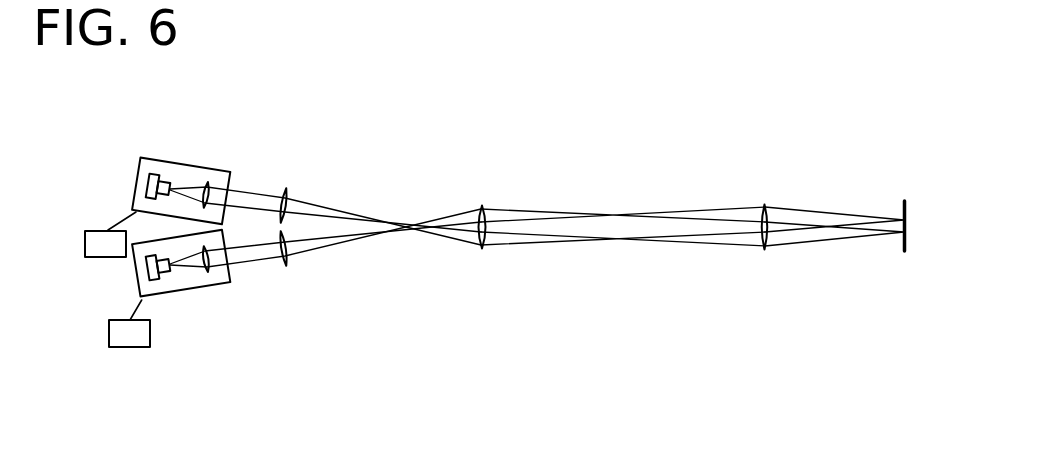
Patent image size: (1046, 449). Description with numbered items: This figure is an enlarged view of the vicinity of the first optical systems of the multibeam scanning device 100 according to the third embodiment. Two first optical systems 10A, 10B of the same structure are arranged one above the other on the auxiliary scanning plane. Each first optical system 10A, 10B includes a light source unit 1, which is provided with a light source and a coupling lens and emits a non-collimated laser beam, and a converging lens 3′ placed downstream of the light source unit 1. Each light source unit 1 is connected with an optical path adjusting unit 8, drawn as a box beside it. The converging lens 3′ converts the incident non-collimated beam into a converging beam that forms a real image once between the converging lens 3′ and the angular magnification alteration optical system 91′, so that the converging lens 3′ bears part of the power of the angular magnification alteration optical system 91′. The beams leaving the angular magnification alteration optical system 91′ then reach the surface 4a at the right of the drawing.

The light source unit 1 is at (183, 169).
The optical path adjusting unit 8 is at (97, 258).
The converging lens 3′ is at (287, 189).
The first optical system 10A is at (255, 164).
The first optical system 10B is at (259, 292).
The angular magnification alteration optical system 91′ is at (778, 261).
The first polygonal mirror reflecting surface 4a is at (903, 240).
The multibeam scanning device 100 is at (552, 154).